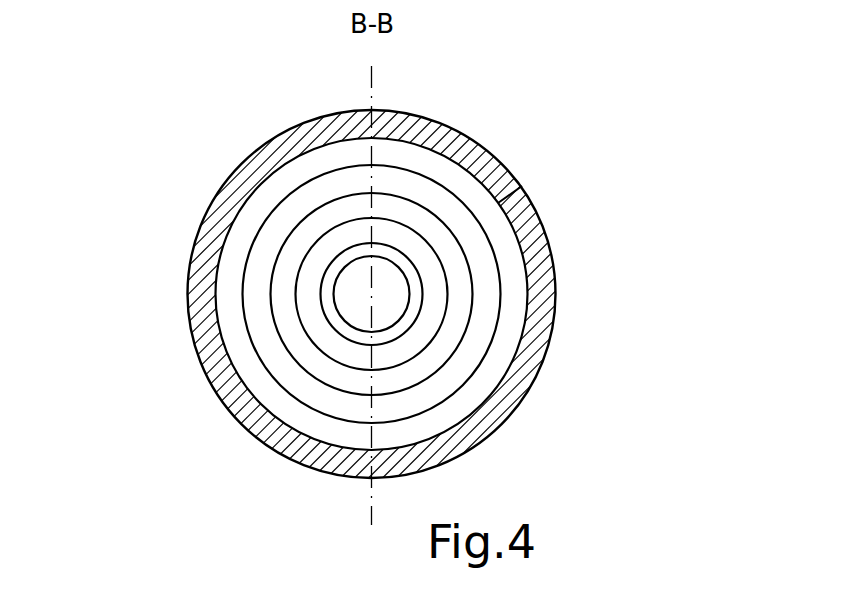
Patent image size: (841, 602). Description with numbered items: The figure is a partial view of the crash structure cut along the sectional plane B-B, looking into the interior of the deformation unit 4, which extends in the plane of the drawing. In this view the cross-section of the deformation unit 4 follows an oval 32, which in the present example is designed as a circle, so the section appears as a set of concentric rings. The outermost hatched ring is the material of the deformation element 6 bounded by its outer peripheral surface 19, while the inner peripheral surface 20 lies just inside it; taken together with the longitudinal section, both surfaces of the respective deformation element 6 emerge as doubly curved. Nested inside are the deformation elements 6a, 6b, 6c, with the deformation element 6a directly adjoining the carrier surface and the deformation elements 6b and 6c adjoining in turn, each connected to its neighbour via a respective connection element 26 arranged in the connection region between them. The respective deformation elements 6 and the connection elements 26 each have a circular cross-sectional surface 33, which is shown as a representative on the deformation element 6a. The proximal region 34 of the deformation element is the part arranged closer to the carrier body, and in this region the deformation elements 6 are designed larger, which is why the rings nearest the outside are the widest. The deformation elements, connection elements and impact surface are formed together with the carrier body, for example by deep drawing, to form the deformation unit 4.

The deformation unit 4 is at (467, 88).
The outer peripheral surface 19 is at (486, 147).
The oval 32 is at (527, 192).
The circular cross-sectional surface 33 is at (538, 291).
The proximal region 34 is at (545, 358).
The inner peripheral surface 20 is at (266, 203).
The deformation element 6 is at (290, 336).
The deformation element 6a is at (232, 277).
The deformation element 6b is at (297, 340).
The deformation element 6c is at (348, 332).
The connection element 26 is at (263, 317).